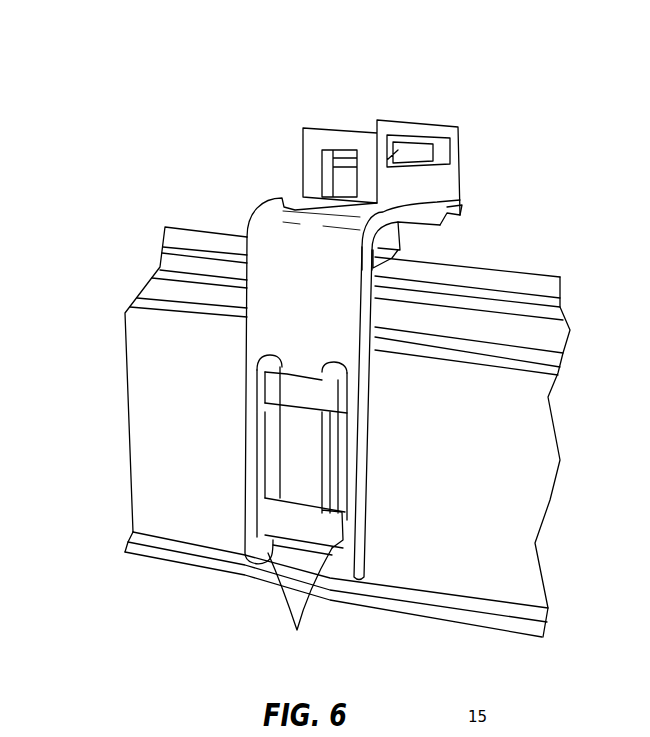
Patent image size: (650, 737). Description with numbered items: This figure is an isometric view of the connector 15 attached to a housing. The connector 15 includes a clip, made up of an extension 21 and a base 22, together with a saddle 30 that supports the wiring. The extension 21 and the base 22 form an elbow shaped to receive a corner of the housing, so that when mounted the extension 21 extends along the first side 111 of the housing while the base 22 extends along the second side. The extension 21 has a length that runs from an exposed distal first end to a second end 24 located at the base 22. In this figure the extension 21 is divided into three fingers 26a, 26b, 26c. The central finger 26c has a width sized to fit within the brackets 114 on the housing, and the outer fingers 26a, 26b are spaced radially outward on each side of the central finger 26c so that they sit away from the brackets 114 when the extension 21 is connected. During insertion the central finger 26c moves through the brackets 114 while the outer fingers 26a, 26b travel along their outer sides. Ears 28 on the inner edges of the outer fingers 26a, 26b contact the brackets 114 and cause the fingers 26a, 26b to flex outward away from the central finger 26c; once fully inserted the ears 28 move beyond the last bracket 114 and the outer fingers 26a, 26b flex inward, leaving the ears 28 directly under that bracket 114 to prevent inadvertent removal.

The connector 15 is at (252, 113).
The extension 21 is at (292, 413).
The base 22 is at (448, 208).
The second end 24 is at (290, 210).
The outer finger 26a is at (247, 463).
The outer finger 26b is at (352, 478).
The central finger 26c is at (303, 443).
The ears 28 is at (300, 607).
The saddle 30 is at (420, 182).
The first side 111 is at (165, 432).
The brackets 114 is at (283, 390).